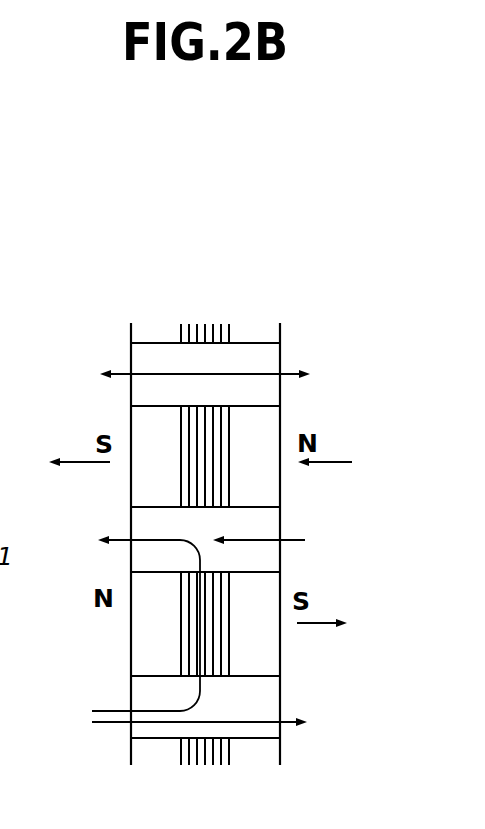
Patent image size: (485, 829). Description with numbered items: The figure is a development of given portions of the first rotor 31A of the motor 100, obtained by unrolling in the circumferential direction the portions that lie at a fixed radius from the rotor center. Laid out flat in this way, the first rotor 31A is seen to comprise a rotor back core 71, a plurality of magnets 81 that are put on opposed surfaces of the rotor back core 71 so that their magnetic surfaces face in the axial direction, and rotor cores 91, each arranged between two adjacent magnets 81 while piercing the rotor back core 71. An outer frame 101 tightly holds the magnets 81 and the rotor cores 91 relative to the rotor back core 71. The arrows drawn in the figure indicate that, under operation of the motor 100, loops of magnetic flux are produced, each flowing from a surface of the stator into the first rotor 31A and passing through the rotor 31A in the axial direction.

The motor 100 is at (278, 177).
The first rotor 31A is at (161, 297).
The rotor back core 71 is at (215, 327).
The rotor core 91 is at (262, 357).
The magnet 81 is at (143, 427).
The outer frame 101 is at (100, 623).